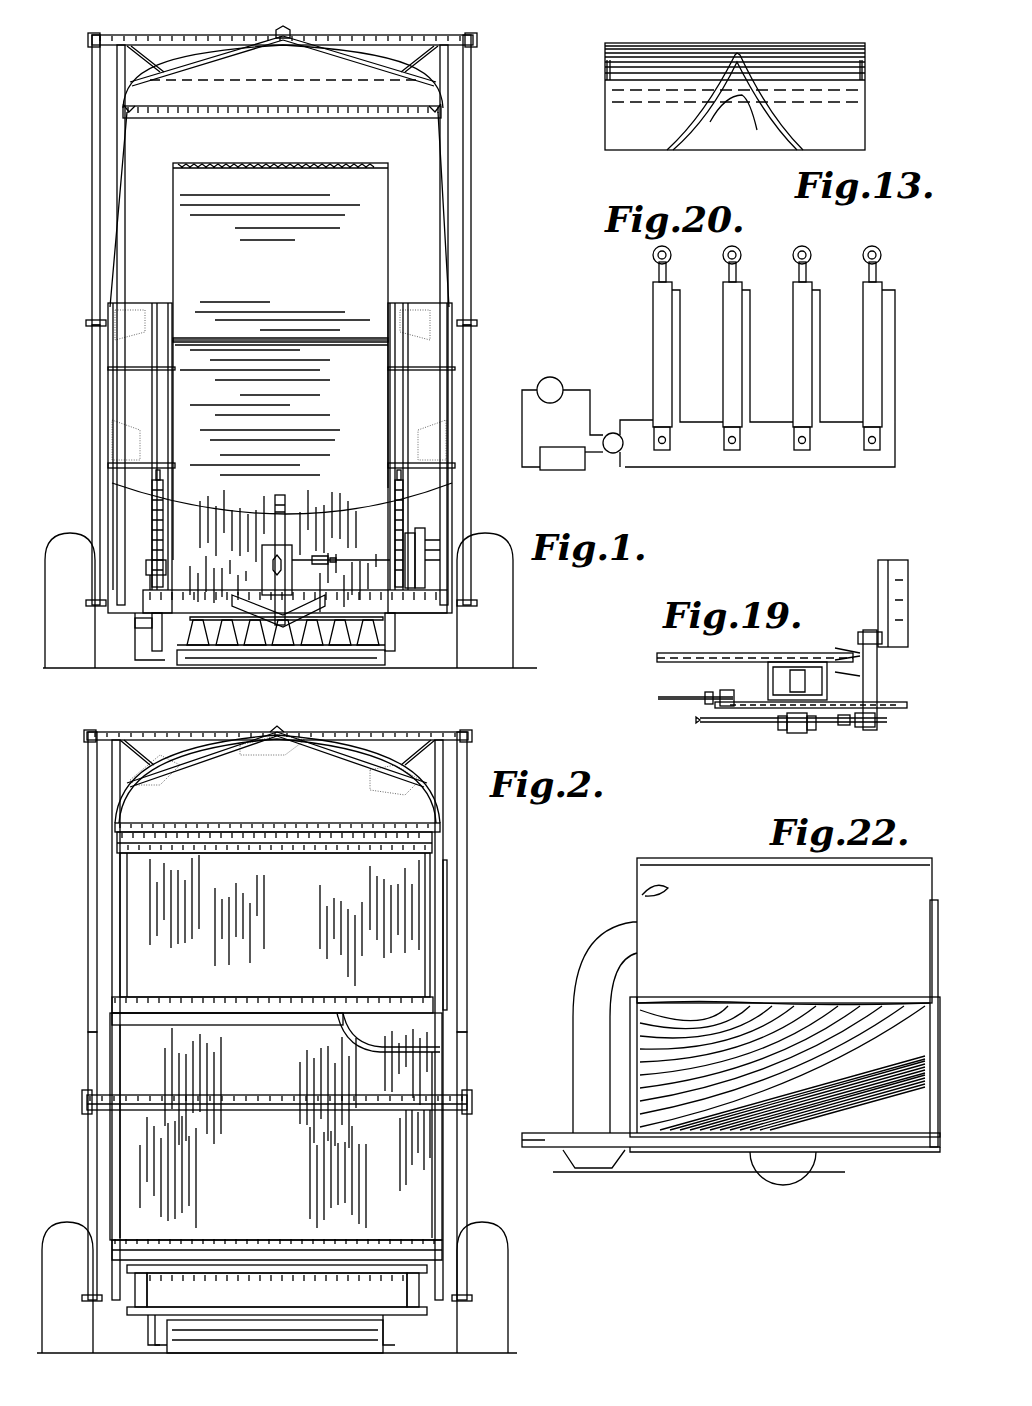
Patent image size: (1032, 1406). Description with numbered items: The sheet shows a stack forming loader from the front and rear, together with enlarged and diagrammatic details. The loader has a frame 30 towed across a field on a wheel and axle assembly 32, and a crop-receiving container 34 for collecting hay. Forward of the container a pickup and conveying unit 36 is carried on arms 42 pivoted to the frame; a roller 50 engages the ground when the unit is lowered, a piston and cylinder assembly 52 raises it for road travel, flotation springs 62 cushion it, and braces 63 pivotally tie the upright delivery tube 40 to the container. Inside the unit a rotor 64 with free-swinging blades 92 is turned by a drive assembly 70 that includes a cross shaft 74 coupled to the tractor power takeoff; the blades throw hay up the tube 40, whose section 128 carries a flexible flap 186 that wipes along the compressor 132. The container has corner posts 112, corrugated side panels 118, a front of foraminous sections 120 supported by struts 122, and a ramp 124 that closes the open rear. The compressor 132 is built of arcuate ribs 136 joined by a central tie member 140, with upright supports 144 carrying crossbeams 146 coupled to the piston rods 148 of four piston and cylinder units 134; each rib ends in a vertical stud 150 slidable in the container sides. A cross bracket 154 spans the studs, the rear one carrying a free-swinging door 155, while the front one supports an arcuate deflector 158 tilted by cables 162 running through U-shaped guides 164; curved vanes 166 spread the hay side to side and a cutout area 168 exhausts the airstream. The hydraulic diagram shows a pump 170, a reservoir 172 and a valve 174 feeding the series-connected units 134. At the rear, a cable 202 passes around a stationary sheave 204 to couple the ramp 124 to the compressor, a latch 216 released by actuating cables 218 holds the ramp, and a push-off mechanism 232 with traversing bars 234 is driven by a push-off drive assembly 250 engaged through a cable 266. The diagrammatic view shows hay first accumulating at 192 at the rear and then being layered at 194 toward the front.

In FIG. 1, the frame 30 is at (115, 623).
In FIG. 22, the frame 30 is at (655, 1160).
In FIG. 1, the wheel and axle assembly 32 is at (515, 600).
In FIG. 22, the wheel and axle assembly 32 is at (805, 1165).
In FIG. 2, the wheel and axle assembly 32 is at (508, 1296).
In FIG. 22, the crop-receiving container 34 is at (625, 1027).
In FIG. 2, the crop-receiving container 34 is at (424, 1040).
In FIG. 1, the pickup and conveying unit 36 is at (158, 668).
In FIG. 22, the pickup and conveying unit 36 is at (562, 1125).
In FIG. 2, the pickup and conveying unit 36 is at (150, 1325).
In FIG. 1, the delivery tube 40 is at (385, 285).
In FIG. 22, the delivery tube 40 is at (585, 958).
In FIG. 1, the arms 42 is at (153, 640).
In FIG. 1, the roller 50 is at (340, 664).
In FIG. 2, the roller 50 is at (385, 1352).
In FIG. 1, the piston and cylinder assembly 52 is at (146, 572).
In FIG. 1, the flotation springs 62 is at (165, 512).
In FIG. 1, the braces 63 is at (165, 370).
In FIG. 1, the rotor 64 is at (232, 650).
In FIG. 1, the drive assembly 70 is at (392, 550).
In FIG. 1, the cross shaft 74 is at (330, 548).
In FIG. 1, the blade 92 is at (312, 650).
In FIG. 19, the corner posts 112 is at (768, 680).
In FIG. 2, the corner posts 112 is at (95, 1003).
In FIG. 19, the side panels 118 is at (748, 656).
In FIG. 1, the sections of foraminous material 120 is at (125, 412).
In FIG. 1, the struts 122 is at (390, 343).
In FIG. 19, the ramp 124 is at (878, 588).
In FIG. 22, the ramp 124 is at (930, 1058).
In FIG. 2, the ramp 124 is at (135, 1050).
In FIG. 1, the section of delivery tube 128 is at (205, 165).
In FIG. 1, the compressor 132 is at (450, 140).
In FIG. 22, the compressor 132 is at (630, 870).
In FIG. 2, the compressor 132 is at (398, 750).
In FIG. 1, the piston and cylinder units 134 is at (88, 362).
In FIG. 20, the piston and cylinder units 134 is at (652, 318).
In FIG. 2, the piston and cylinder units 134 is at (88, 950).
In FIG. 1, the arcuate ribs 136 is at (226, 50).
In FIG. 2, the arcuate ribs 136 is at (385, 745).
In FIG. 1, the central tie member 140 is at (294, 48).
In FIG. 2, the central tie member 140 is at (277, 730).
In FIG. 1, the upright supports 144 is at (117, 73).
In FIG. 2, the upright supports 144 is at (112, 752).
In FIG. 1, the crossbeam 146 is at (463, 36).
In FIG. 2, the crossbeam 146 is at (173, 733).
In FIG. 1, the piston rods 148 is at (92, 243).
In FIG. 2, the piston rods 148 is at (92, 822).
In FIG. 1, the vertical stud 150 is at (118, 165).
In FIG. 2, the vertical stud 150 is at (447, 888).
In FIG. 1, the cross bracket 154 is at (228, 118).
In FIG. 2, the cross bracket 154 is at (206, 826).
In FIG. 22, the free-swinging door 155 is at (930, 948).
In FIG. 2, the free-swinging door 155 is at (138, 887).
In FIG. 1, the deflector 158 is at (340, 122).
In FIG. 13, the deflector 158 is at (603, 85).
In FIG. 22, the deflector 158 is at (662, 893).
In FIG. 1, the cables 162 is at (120, 203).
In FIG. 1, the U-shaped guides 164 is at (445, 75).
In FIG. 13, the curved vanes 166 is at (746, 120).
In FIG. 13, the cutout area 168 is at (728, 150).
In FIG. 20, the pump 170 is at (558, 380).
In FIG. 20, the reservoir 172 is at (570, 472).
In FIG. 20, the valve 174 is at (616, 434).
In FIG. 1, the flap 186 is at (298, 163).
In FIG. 22, the hay accumulation 192 is at (843, 1078).
In FIG. 22, the layered hay 194 is at (695, 1027).
In FIG. 19, the cable 202 is at (705, 724).
In FIG. 19, the stationary sheave 204 is at (787, 733).
In FIG. 19, the latch 216 is at (855, 703).
In FIG. 2, the latch 216 is at (87, 1118).
In FIG. 1, the actuating cables 218 is at (275, 500).
In FIG. 19, the actuating cables 218 is at (675, 697).
In FIG. 2, the push-off mechanism 232 is at (205, 1268).
In FIG. 2, the bars 234 is at (258, 1272).
In FIG. 1, the push-off drive assembly 250 is at (425, 545).
In FIG. 1, the cable 266 is at (310, 507).